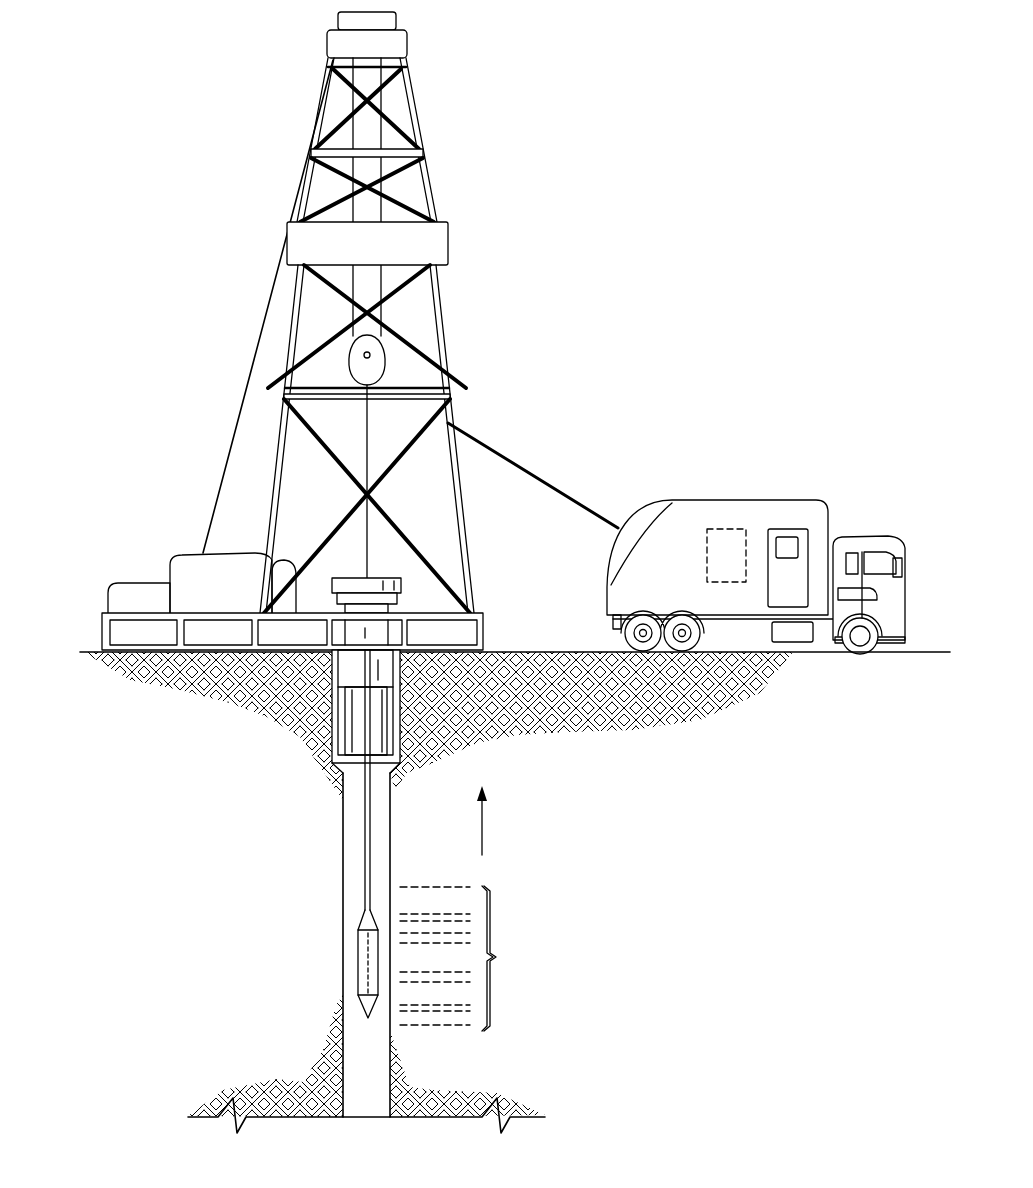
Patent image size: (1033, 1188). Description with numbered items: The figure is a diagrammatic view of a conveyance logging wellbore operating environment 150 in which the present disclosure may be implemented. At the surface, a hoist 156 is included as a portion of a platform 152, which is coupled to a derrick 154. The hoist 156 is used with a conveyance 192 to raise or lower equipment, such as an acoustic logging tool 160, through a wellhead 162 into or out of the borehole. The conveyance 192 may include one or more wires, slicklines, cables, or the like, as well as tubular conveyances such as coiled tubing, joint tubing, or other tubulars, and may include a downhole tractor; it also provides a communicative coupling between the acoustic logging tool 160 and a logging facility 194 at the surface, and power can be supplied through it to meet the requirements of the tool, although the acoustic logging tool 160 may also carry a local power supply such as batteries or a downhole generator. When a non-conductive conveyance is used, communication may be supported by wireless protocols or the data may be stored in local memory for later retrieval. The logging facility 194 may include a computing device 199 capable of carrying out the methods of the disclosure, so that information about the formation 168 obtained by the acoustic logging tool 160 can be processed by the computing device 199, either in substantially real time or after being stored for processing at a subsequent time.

The conveyance logging wellbore operating environment 150 is at (177, 85).
The platform 152 is at (100, 632).
The derrick 154 is at (421, 138).
The hoist 156 is at (346, 371).
The acoustic logging tool 160 is at (364, 962).
The wellhead 162 is at (343, 577).
The formation 168 is at (470, 958).
The conveyance 192 is at (538, 477).
The logging facility 194 is at (787, 529).
The computing device 199 is at (727, 528).